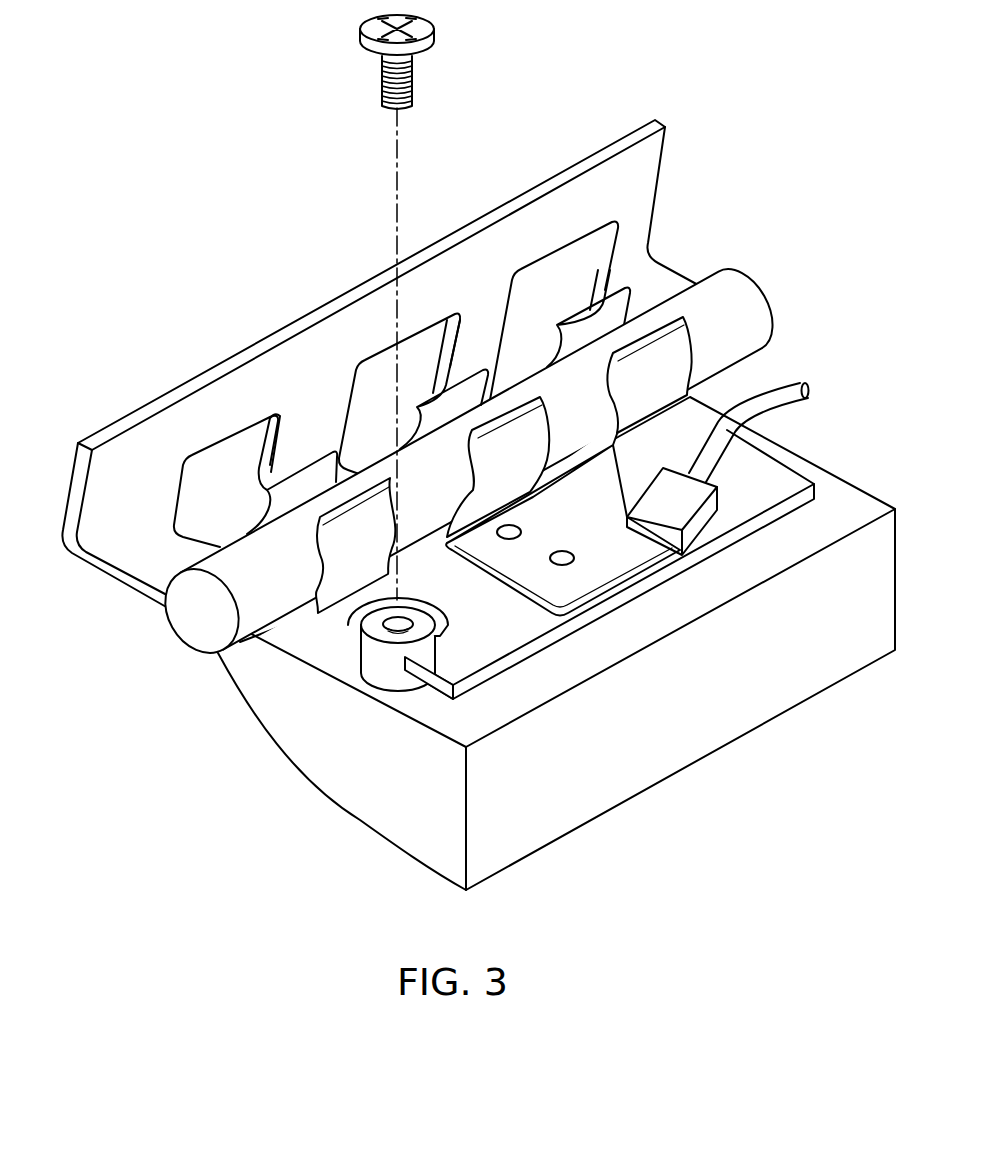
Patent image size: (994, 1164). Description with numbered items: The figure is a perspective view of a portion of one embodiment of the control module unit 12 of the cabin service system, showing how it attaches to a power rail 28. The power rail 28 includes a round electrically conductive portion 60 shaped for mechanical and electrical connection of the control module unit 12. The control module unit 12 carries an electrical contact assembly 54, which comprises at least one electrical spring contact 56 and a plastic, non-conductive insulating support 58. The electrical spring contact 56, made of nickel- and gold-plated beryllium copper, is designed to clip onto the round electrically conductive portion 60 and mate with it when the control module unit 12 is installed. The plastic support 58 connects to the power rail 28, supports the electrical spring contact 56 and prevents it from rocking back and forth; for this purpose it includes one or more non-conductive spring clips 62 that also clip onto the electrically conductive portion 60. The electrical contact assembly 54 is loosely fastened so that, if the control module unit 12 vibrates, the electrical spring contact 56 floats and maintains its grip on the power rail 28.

The control module unit 12 is at (537, 851).
The power rail 28 is at (612, 146).
The electrical contact assembly 54 is at (850, 481).
The electrical spring contact 56 is at (528, 398).
The insulating support 58 is at (640, 600).
The electrically conductive portion 60 is at (742, 270).
The non-conductive spring clip 62 is at (378, 483).